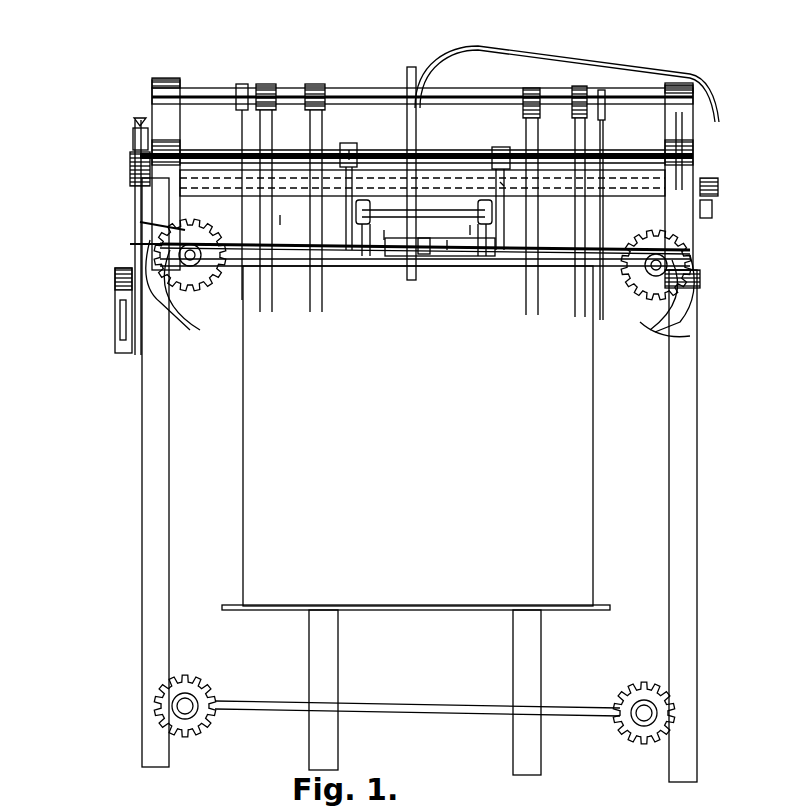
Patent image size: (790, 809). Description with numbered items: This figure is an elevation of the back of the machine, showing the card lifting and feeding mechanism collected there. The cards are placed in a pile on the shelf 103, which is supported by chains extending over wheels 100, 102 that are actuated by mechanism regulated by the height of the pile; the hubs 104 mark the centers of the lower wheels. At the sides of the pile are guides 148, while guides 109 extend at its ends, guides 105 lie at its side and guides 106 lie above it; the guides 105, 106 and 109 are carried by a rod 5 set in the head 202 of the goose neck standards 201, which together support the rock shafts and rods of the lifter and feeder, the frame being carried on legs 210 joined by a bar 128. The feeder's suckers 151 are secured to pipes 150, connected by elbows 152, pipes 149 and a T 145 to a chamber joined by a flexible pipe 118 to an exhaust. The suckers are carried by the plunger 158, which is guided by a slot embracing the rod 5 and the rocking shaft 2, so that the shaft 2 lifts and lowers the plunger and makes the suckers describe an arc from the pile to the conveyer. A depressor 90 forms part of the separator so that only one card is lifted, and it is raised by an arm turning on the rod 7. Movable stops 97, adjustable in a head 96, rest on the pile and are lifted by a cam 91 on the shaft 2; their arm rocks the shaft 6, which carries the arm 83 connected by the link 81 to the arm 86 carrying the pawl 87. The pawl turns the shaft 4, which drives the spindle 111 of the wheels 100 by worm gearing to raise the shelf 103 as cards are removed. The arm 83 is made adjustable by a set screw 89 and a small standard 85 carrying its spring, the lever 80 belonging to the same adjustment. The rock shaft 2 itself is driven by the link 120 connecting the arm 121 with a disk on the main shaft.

The rocking shaft 2 is at (636, 186).
The shaft 4 is at (640, 322).
The rod 5 is at (646, 98).
The shaft 6 is at (640, 160).
The rod 7 is at (690, 286).
The lever 80 is at (140, 226).
The link 81 is at (130, 246).
The arm 83 is at (135, 167).
The small standard 85 is at (135, 143).
The arm 86 is at (116, 328).
The pawl 87 is at (118, 306).
The set screw 89 is at (140, 126).
The depressor 90 is at (470, 225).
The cam 91 is at (500, 182).
The head 96 is at (349, 150).
The movable stops 97 is at (280, 215).
The wheels 100 is at (170, 240).
The wheels 102 is at (170, 678).
The shelf 103 is at (620, 608).
The gear hub 104 is at (185, 707).
The guides 105 is at (268, 86).
The guides 106 is at (316, 85).
The guides 109 is at (240, 84).
The spindle 111 is at (686, 252).
The flexible pipe 118 is at (562, 58).
The link 120 is at (720, 187).
The arm 121 is at (705, 216).
The connecting bar 128 is at (413, 708).
The T 145 is at (447, 240).
The guides 148 is at (334, 654).
The pipes 149 is at (384, 230).
The pipes 150 is at (345, 142).
The suckers 151 is at (522, 200).
The elbows 152 is at (360, 205).
The plunger 158 is at (418, 72).
The standards 201 is at (160, 125).
The head 202 is at (735, 100).
The legs 210 is at (155, 404).